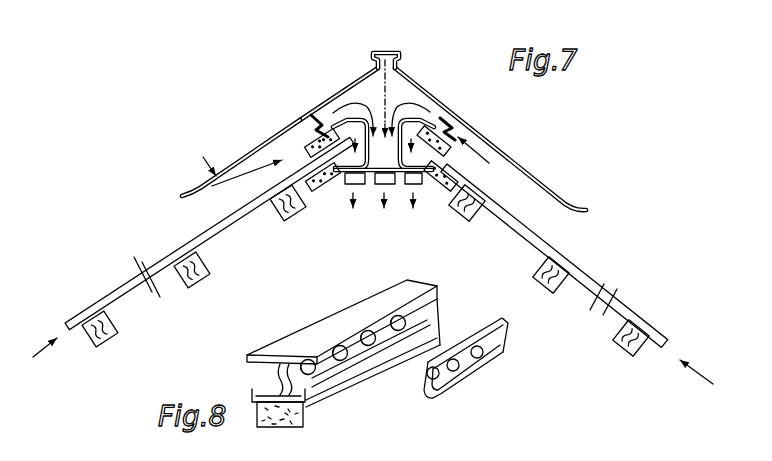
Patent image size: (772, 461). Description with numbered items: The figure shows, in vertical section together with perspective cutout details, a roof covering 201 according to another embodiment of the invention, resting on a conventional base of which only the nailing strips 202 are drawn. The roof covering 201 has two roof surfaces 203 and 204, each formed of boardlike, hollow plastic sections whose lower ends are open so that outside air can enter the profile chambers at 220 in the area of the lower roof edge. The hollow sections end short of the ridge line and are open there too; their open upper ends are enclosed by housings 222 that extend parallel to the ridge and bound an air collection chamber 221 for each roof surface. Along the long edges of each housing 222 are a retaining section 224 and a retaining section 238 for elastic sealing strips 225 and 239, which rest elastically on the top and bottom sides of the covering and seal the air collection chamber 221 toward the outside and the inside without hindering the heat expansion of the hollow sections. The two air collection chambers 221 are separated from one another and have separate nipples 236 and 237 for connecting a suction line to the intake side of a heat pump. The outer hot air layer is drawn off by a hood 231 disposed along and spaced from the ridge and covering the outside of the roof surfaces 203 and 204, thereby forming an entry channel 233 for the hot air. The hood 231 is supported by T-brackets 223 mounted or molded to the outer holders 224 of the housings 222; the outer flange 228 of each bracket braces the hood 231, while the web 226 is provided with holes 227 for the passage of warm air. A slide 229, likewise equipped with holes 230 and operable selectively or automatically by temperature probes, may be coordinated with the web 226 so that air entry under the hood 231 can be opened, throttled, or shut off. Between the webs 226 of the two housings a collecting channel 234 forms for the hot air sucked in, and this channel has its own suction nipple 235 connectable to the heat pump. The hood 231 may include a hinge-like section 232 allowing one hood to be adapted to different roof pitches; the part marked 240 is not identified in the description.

In FIG. 7, the roof covering 201 is at (158, 210).
In FIG. 7, the nailing strips 202 is at (110, 345).
In FIG. 7, the roof surface 203 is at (88, 318).
In FIG. 7, the roof surface 204 is at (601, 270).
In FIG. 7, the air entry point 220 is at (41, 367).
In FIG. 7, the air collection chamber 221 is at (443, 117).
In FIG. 7, the housing 222 is at (417, 128).
In FIG. 7, the T-bracket 223 is at (306, 131).
In FIG. 8, the T-bracket 223 is at (238, 346).
In FIG. 8, the retaining section 224 is at (255, 397).
In FIG. 8, the elastic sealing strip 225 is at (277, 424).
In FIG. 8, the web 226 is at (300, 381).
In FIG. 8, the holes 227 is at (341, 356).
In FIG. 8, the outer flange 228 is at (293, 337).
In FIG. 8, the slide 229 is at (429, 396).
In FIG. 8, the holes 230 is at (453, 371).
In FIG. 7, the hood 231 is at (328, 92).
In FIG. 7, the hinge-like section 232 is at (388, 51).
In FIG. 7, the entry channel 233 is at (238, 193).
In FIG. 7, the collecting channel 234 is at (385, 93).
In FIG. 7, the suction nipple 235 is at (382, 186).
In FIG. 7, the nipple 236 is at (348, 186).
In FIG. 7, the nipple 237 is at (414, 186).
In FIG. 7, the retaining section 238 is at (316, 190).
In FIG. 7, the elastic sealing strip 239 is at (452, 171).
In FIG. 8, the channel part 240 is at (532, 449).